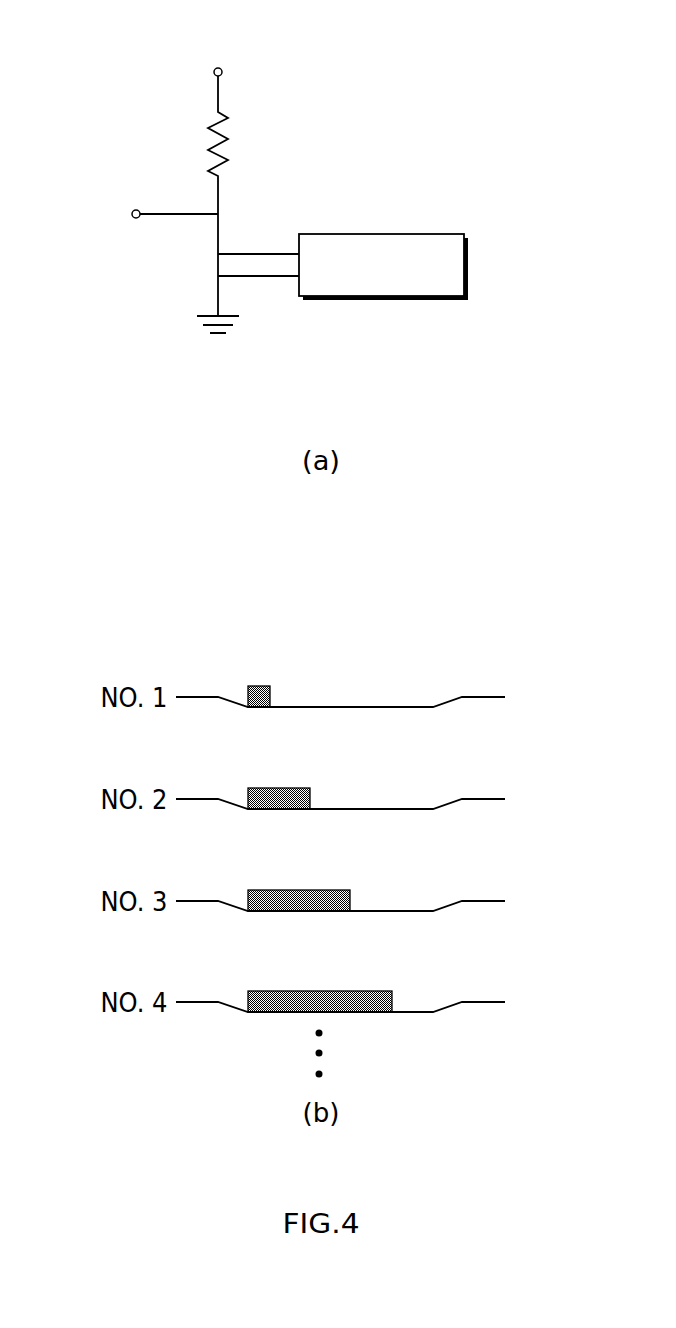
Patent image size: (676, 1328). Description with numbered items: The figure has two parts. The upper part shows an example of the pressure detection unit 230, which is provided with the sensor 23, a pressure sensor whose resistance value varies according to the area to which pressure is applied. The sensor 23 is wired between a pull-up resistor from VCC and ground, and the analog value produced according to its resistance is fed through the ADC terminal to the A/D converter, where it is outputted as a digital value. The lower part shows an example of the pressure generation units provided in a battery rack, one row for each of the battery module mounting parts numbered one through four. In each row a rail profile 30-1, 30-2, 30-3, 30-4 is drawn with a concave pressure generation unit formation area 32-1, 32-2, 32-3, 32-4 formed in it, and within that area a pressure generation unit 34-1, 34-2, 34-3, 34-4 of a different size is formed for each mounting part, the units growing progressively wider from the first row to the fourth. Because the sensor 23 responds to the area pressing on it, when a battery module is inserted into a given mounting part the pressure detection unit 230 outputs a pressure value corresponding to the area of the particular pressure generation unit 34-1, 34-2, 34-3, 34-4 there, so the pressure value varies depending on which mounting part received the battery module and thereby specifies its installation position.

The pressure detection unit 230 is at (433, 98).
The sensor 23 is at (466, 263).
The pattern plate No. 1 30-1 is at (483, 697).
The pattern plate No. 2 30-2 is at (483, 799).
The pattern plate No. 3 30-3 is at (483, 901).
The pattern plate No. 4 30-4 is at (483, 1002).
The pressure generation unit formation area 32-1 is at (422, 707).
The pressure generation unit formation area 32-2 is at (422, 809).
The pressure generation unit formation area 32-3 is at (422, 911).
The pressure generation unit formation area 32-4 is at (422, 1012).
The pressure generation unit 34-1 is at (259, 686).
The pressure generation unit 34-2 is at (280, 788).
The pressure generation unit 34-3 is at (301, 890).
The pressure generation unit 34-4 is at (322, 991).